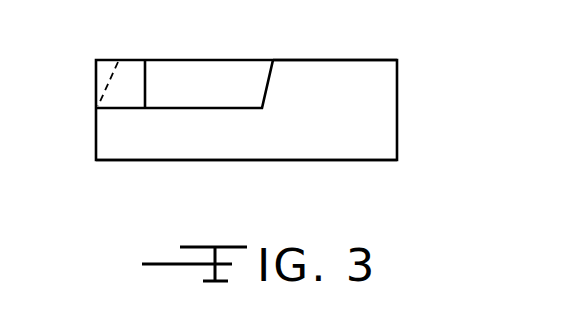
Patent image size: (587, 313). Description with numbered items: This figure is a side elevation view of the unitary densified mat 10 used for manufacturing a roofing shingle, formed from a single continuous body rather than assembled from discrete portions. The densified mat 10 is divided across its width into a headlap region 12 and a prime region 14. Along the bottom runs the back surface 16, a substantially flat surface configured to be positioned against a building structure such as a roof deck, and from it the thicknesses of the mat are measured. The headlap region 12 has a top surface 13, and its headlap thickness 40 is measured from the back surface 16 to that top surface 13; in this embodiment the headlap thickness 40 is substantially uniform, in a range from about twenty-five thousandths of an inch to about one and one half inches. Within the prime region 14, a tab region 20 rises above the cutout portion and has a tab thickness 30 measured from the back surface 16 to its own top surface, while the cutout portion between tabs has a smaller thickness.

The densified mat 10 is at (425, 60).
The headlap region 12 is at (392, 53).
The top surface 13 is at (394, 56).
The prime region 14 is at (275, 53).
The back surface 16 is at (359, 160).
The tab region 20 is at (232, 108).
The thickness t30 30 is at (196, 60).
The thickness t40 40 is at (341, 60).